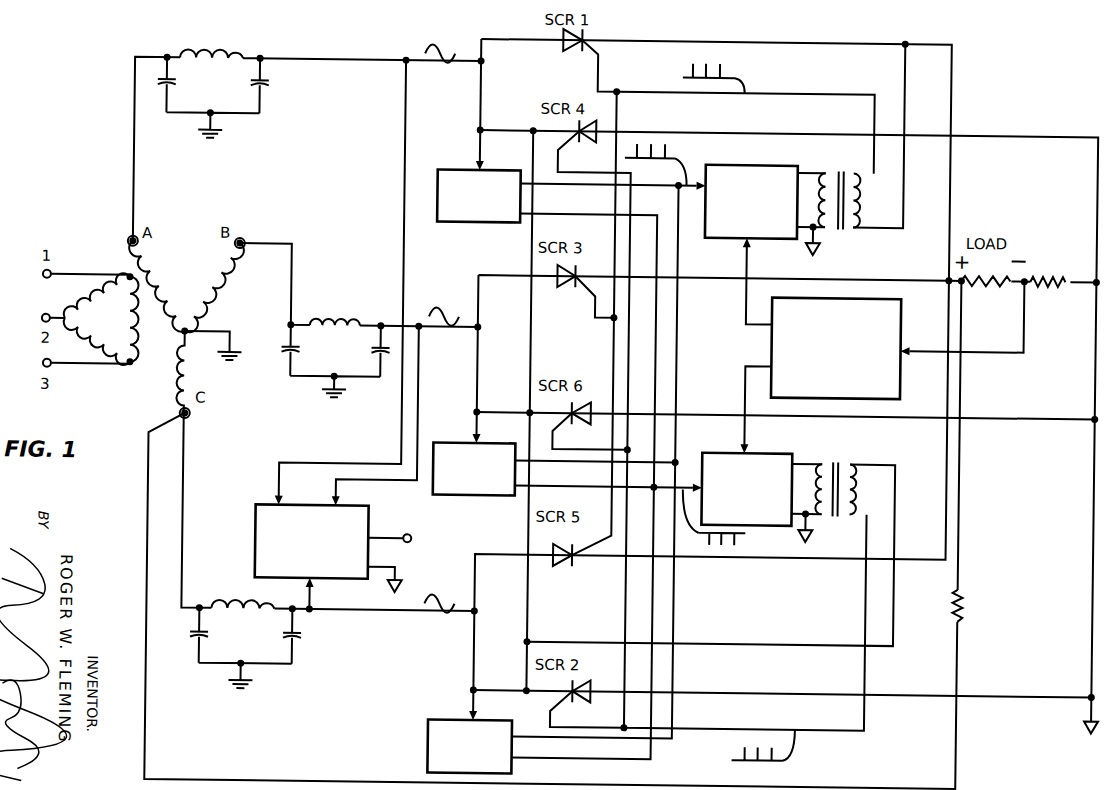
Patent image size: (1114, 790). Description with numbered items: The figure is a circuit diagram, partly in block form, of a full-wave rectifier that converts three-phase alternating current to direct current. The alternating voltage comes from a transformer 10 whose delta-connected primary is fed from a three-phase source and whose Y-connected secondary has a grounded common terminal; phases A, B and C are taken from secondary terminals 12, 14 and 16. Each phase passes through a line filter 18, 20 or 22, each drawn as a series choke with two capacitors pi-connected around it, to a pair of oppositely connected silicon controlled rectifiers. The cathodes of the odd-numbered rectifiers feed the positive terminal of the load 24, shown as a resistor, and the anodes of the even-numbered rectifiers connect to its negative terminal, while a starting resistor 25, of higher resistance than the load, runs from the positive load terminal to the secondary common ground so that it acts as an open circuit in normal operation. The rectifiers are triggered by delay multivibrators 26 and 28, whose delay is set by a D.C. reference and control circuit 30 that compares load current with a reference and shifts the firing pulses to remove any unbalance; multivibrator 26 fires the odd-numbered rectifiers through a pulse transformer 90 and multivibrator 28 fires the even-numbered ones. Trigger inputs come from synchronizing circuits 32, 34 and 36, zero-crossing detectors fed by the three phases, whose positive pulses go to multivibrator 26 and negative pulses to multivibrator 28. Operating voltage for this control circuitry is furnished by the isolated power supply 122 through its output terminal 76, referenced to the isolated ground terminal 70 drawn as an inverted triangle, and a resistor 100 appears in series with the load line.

The transformer 10 is at (186, 276).
The secondary terminal (phase A) 12 is at (128, 244).
The secondary terminal (phase B) 14 is at (239, 246).
The secondary terminal (phase C) 16 is at (190, 418).
The line filter 18 is at (226, 92).
The line filter 20 is at (330, 348).
The line filter 22 is at (255, 643).
The load 24 is at (993, 284).
The starting resistor 25 is at (965, 596).
The delay multivibrator 26 is at (736, 161).
The delay multivibrator 28 is at (755, 448).
The D.C. reference and control circuit 30 is at (904, 311).
The synchronizing circuit 32 is at (456, 171).
The synchronizing circuit 34 is at (455, 444).
The synchronizing circuit 36 is at (452, 721).
The isolated ground terminal 70 is at (404, 590).
The output terminal 76 is at (410, 536).
The pulse transformer 90 is at (833, 170).
The resistor 100 is at (1043, 270).
The isolated power supply block 122 is at (262, 508).